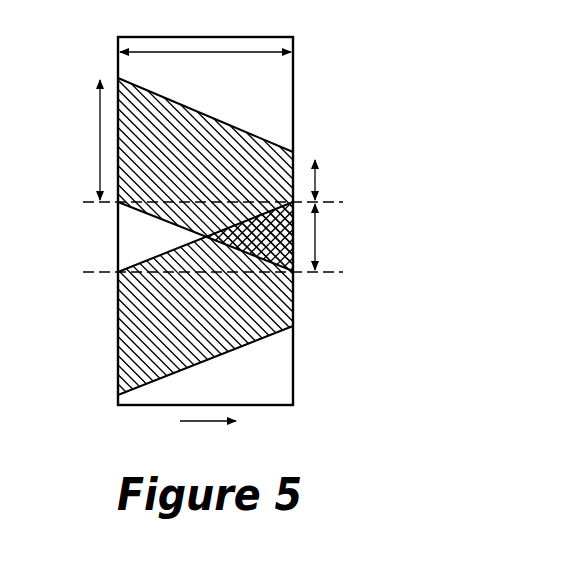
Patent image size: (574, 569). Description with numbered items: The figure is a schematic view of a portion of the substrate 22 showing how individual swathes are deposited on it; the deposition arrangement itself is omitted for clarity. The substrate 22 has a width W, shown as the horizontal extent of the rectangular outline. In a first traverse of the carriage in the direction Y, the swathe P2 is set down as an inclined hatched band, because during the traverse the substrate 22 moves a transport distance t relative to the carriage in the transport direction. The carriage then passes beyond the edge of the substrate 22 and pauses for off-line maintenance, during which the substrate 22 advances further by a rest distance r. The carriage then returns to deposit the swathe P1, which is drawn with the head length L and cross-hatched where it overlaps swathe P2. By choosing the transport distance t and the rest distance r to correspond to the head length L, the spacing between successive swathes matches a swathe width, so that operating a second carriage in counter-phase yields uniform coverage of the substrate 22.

The substrate 22 is at (293, 96).
The swathe P1 is at (148, 161).
The swathe P2 is at (152, 335).
The width W is at (205, 28).
The head length L is at (84, 140).
The rest distance r is at (326, 180).
The transport distance t is at (326, 237).
The traverse direction Y is at (208, 435).